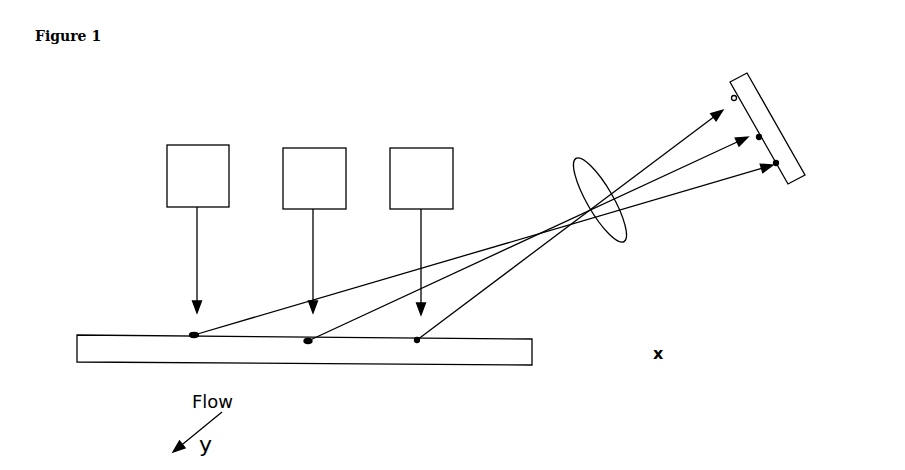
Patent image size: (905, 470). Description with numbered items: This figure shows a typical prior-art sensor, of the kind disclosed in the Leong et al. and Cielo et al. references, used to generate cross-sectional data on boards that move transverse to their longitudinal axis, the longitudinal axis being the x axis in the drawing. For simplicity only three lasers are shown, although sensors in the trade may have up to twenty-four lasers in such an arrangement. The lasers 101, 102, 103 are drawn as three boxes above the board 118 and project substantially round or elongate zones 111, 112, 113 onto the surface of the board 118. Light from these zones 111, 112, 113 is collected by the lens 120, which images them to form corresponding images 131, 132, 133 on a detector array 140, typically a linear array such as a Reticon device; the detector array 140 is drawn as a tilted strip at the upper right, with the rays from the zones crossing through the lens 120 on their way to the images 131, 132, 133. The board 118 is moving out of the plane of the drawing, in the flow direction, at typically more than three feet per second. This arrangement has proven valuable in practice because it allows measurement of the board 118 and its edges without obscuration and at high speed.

The laser 101 is at (198, 217).
The laser 102 is at (314, 215).
The laser 103 is at (421, 215).
The zone 111 is at (188, 341).
The zone 112 is at (300, 353).
The zone 113 is at (415, 343).
The board 118 is at (532, 352).
The lens 120 is at (620, 245).
The image 131 is at (727, 96).
The image 132 is at (761, 135).
The image 133 is at (774, 170).
The detector array 140 is at (788, 133).